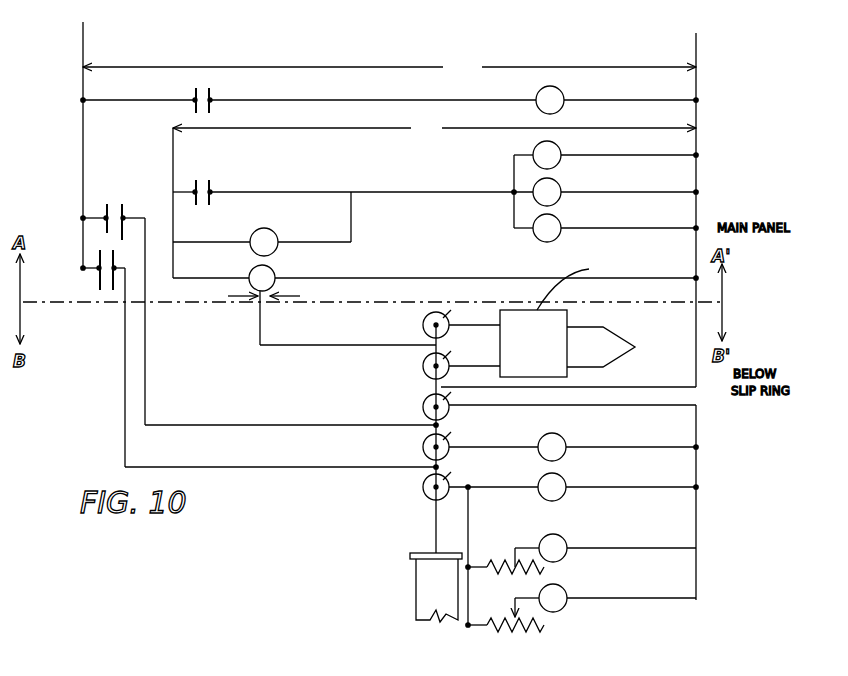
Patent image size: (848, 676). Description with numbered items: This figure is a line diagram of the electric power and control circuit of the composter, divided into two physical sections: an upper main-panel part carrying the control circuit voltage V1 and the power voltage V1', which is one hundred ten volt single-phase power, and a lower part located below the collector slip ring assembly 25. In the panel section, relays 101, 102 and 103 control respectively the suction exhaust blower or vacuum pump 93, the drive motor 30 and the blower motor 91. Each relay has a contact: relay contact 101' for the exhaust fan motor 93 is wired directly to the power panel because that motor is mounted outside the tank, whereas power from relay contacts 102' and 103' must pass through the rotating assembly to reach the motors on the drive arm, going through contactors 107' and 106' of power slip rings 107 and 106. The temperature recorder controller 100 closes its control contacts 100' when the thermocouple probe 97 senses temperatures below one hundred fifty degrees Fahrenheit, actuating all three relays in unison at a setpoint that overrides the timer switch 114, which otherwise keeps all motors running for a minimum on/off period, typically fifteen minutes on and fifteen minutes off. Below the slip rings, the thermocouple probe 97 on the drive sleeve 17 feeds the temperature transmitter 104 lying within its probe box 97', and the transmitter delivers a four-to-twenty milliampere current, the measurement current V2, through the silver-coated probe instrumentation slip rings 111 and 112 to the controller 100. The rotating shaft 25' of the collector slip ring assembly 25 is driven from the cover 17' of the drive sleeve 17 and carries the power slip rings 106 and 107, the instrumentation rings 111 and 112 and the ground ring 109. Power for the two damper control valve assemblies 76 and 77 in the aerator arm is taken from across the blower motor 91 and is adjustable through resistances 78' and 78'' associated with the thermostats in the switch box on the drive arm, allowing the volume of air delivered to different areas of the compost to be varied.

The relay contact 101' is at (308, 93).
The control contacts 100' is at (353, 185).
The relay contact 102' is at (258, 302).
The relay contact 103' is at (238, 350).
The timer switch 114 is at (273, 232).
The temperature recorder controller 100 is at (435, 273).
The suction exhaust blower or vacuum pump 93 is at (537, 106).
The relay 101 is at (606, 153).
The relay 102 is at (605, 189).
The relay 103 is at (606, 226).
The probe box 97' is at (576, 283).
The thermocouple probe 97 is at (614, 347).
The temperature transmitter 104 is at (552, 359).
The probe instrumentation slip ring 111 is at (423, 325).
The probe instrumentation slip ring 112 is at (423, 366).
The collector slip ring assembly 25 is at (250, 400).
The contactor 107' is at (515, 409).
The ground ring 109 is at (450, 413).
The power slip ring 107 is at (437, 446).
The drive motor 30 is at (562, 440).
The contactor 106' is at (465, 462).
The power slip ring 106 is at (436, 486).
The blower motor 91 is at (564, 480).
The rotating shaft 25' is at (388, 526).
The cover 17' is at (401, 565).
The drive sleeve 17 is at (399, 593).
The resistor 78' is at (506, 546).
The damper control valve assembly 76 is at (563, 540).
The damper control valve assembly 77 is at (563, 593).
The resistor 78'' is at (519, 638).
The power voltage V1' is at (389, 68).
The control circuit voltage V1 is at (434, 129).
The measurement current V2 is at (262, 298).